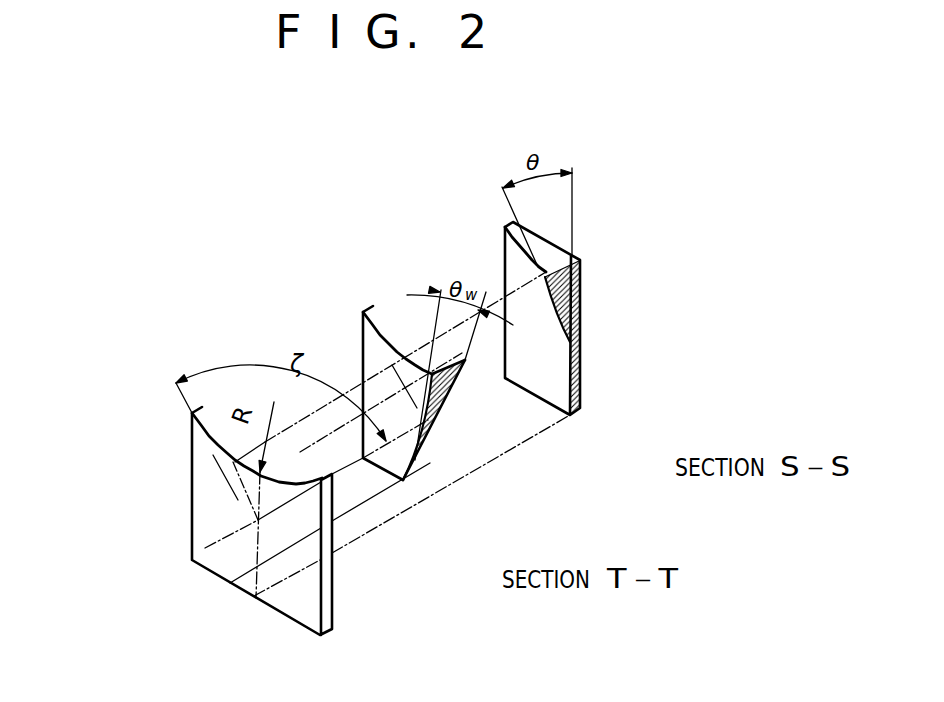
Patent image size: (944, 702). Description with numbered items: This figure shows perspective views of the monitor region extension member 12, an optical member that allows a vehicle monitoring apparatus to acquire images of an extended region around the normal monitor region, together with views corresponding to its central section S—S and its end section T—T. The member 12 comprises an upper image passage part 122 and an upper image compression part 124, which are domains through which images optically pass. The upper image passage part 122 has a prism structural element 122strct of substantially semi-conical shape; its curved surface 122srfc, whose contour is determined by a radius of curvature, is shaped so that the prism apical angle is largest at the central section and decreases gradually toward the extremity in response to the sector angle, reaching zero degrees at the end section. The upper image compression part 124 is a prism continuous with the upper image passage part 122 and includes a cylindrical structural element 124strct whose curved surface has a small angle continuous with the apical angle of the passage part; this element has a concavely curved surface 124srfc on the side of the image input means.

The monitor region extension member 12 is at (180, 333).
The upper image passage part 122 is at (220, 437).
The upper image compression part 124 is at (230, 497).
The curved surface 122srfc is at (363, 349).
The prism structural element 122strct is at (580, 263).
The cylindrical structural element 124strct is at (575, 337).
The concavely curved surface 124srfc is at (427, 417).